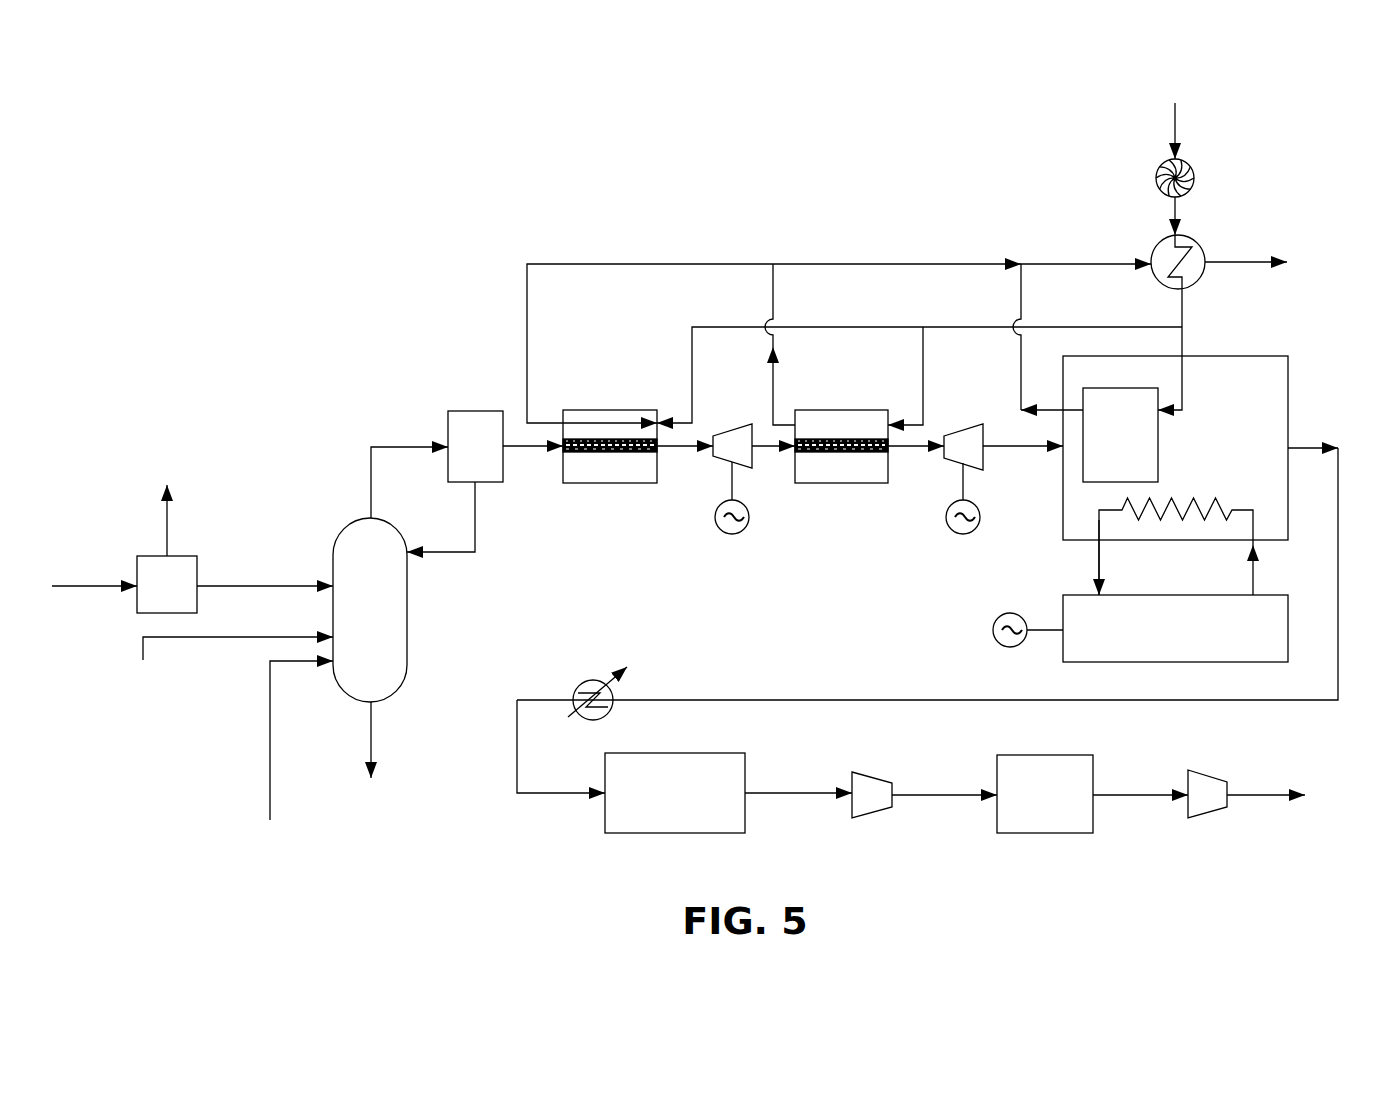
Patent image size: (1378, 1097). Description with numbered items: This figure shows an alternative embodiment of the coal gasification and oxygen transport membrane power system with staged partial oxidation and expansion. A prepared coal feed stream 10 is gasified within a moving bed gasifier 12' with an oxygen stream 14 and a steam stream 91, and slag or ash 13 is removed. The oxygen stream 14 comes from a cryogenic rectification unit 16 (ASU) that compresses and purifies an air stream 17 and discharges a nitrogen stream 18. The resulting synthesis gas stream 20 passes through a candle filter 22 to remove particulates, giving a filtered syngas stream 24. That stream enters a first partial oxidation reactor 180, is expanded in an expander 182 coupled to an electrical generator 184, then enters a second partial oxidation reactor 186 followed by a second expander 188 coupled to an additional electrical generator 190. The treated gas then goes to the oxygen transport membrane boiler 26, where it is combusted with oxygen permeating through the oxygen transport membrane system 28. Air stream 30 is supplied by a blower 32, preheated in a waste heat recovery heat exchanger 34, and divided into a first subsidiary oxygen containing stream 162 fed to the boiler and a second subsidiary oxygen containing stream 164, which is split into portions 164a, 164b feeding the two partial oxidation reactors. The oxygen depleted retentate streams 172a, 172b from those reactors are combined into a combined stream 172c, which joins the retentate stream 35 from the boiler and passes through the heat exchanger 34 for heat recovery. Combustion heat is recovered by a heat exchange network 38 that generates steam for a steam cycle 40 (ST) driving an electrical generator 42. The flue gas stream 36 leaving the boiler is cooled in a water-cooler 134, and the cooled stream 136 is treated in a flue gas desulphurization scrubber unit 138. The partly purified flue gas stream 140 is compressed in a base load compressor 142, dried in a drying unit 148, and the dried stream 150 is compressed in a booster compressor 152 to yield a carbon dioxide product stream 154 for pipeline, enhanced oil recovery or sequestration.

The coal feed stream 10 is at (228, 640).
The moving bed gasifier 12' is at (414, 610).
The slag or ash 13 is at (371, 725).
The oxygen stream 14 is at (304, 585).
The cryogenic rectification unit 16 is at (183, 555).
The air stream 17 is at (85, 590).
The nitrogen stream 18 is at (165, 530).
The synthesis gas stream 20 is at (378, 447).
The candle filter 22 is at (448, 430).
The filtered syngas stream 24 is at (517, 448).
The oxygen transport membrane boiler 26 is at (1290, 420).
The oxygen transport membrane system 28 is at (1100, 452).
The air stream 30 is at (1178, 128).
The blower 32 is at (1156, 178).
The waste heat recovery heat exchanger 34 is at (1152, 250).
The retentate stream 35 is at (1021, 305).
The flue gas stream 36 is at (808, 698).
The heat exchange network 38 is at (1195, 498).
The steam cycle 40 is at (1272, 595).
The electrical generator 42 is at (992, 630).
The steam stream 91 is at (270, 770).
The water-cooler 134 is at (593, 680).
The cooled stream 136 is at (517, 745).
The flue gas desulphurization scrubber unit 138 is at (715, 753).
The partly purified flue gas stream 140 is at (790, 797).
The base load compressor 142 is at (878, 775).
The drying unit 148 is at (1065, 755).
The dried stream 150 is at (1115, 797).
The booster compressor 152 is at (1210, 815).
The product stream 154 is at (1270, 795).
The first subsidiary oxygen containing stream 162 is at (1182, 335).
The second subsidiary oxygen containing stream 164 is at (1125, 327).
The portion of second subsidiary oxygen containing stream 164a is at (692, 342).
The portion of second subsidiary oxygen containing stream 164b is at (923, 362).
The oxygen depleted retentate stream 172a is at (612, 262).
The oxygen depleted retentate stream 172b is at (773, 300).
The combined stream 172c is at (900, 262).
The first partial oxidation reactor 180 is at (605, 485).
The expander 182 is at (732, 420).
The electrical generator 184 is at (722, 535).
The second partial oxidation reactor 186 is at (838, 485).
The second expander 188 is at (963, 420).
The additional electrical generator 190 is at (950, 535).